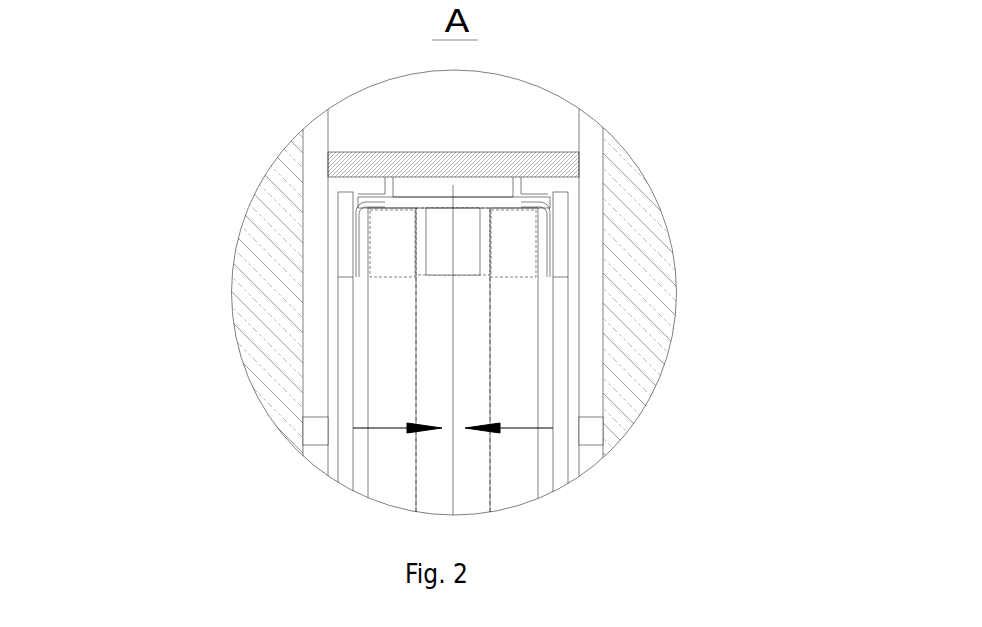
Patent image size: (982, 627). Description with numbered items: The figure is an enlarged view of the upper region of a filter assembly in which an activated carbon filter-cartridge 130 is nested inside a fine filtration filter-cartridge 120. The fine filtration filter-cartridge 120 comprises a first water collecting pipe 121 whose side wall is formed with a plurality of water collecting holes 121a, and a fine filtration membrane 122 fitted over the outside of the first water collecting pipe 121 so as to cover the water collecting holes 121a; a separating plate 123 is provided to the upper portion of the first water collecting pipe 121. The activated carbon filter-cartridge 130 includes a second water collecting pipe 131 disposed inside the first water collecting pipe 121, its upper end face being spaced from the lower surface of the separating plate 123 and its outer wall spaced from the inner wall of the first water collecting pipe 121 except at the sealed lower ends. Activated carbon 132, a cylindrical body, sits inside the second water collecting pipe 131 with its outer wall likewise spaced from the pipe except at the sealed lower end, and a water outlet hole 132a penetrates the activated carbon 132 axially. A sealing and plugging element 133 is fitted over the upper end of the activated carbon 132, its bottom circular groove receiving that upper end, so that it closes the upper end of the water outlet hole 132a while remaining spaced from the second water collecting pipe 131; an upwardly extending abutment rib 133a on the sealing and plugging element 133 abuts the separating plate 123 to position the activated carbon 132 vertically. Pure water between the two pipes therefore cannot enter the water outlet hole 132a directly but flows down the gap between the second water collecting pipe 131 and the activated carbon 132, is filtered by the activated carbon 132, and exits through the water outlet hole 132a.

The fine filtration filter-cartridge 120 is at (527, 295).
The first water collecting pipe 121 is at (539, 295).
The water collecting holes 121a is at (590, 437).
The fine filtration membrane 122 is at (636, 242).
The separating plate 123 is at (497, 164).
The activated carbon filter-cartridge 130 is at (307, 360).
The second water collecting pipe 131 is at (347, 360).
The activated carbon 132 is at (392, 407).
The water outlet hole 132a is at (440, 355).
The sealing and plugging element 133 is at (388, 203).
The abutment rib 133a is at (383, 180).